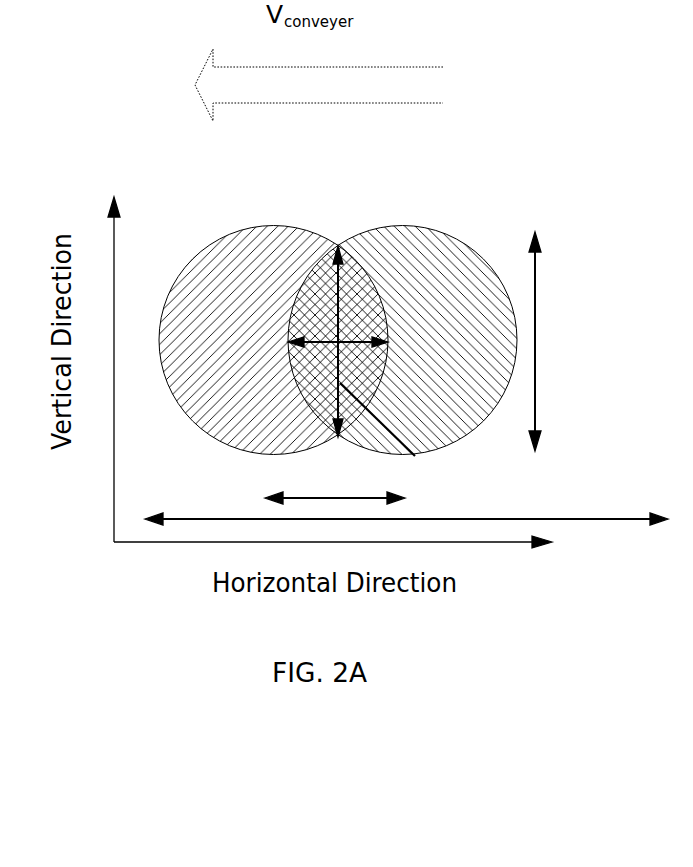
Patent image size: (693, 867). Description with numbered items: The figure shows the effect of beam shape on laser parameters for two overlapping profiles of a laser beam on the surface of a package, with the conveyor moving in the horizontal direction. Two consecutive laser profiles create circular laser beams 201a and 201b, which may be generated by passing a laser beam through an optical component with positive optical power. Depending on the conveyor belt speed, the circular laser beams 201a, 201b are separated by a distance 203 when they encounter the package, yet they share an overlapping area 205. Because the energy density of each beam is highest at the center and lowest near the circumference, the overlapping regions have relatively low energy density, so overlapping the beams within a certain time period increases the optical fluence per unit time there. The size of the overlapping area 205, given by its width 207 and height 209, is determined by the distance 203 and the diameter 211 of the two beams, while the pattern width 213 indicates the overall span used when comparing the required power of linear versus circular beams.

The circular laser beam 201a is at (228, 236).
The circular laser beam 201b is at (448, 236).
The distance 203 is at (318, 497).
The overlapping area 205 is at (338, 246).
The width 207 is at (356, 340).
The height 209 is at (415, 456).
The diameter 211 is at (535, 330).
The pattern width 213 is at (585, 519).